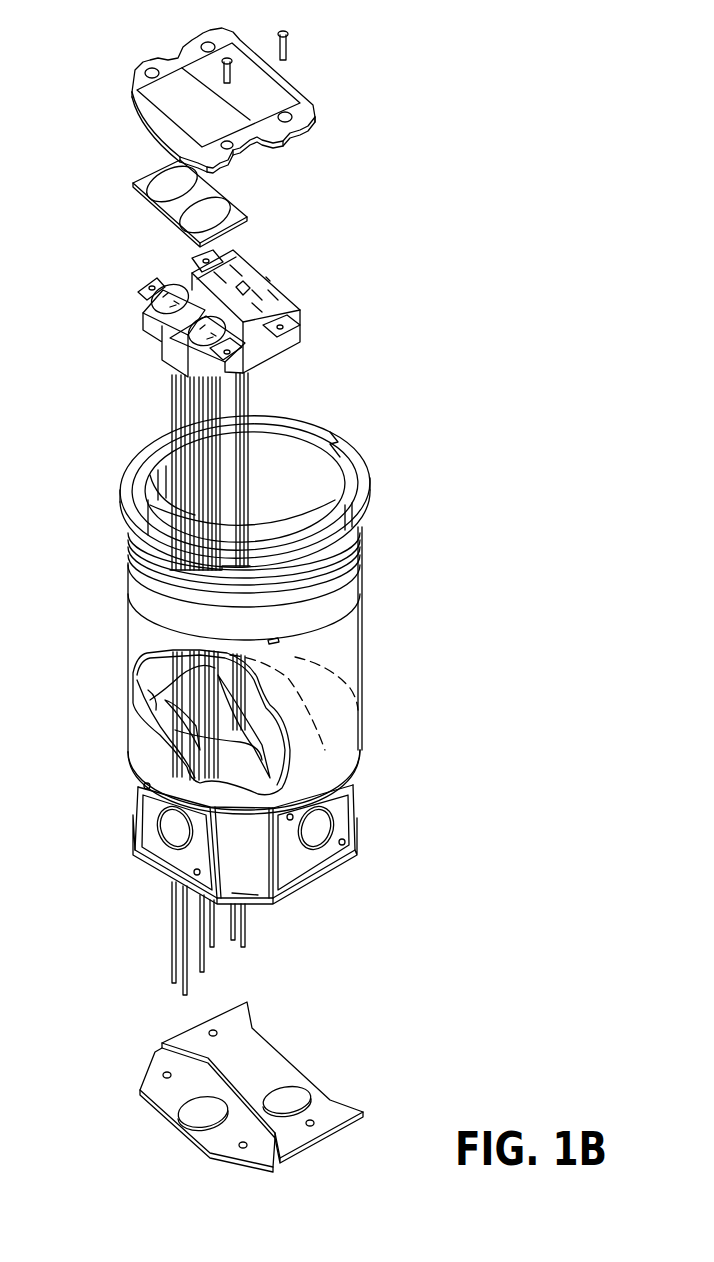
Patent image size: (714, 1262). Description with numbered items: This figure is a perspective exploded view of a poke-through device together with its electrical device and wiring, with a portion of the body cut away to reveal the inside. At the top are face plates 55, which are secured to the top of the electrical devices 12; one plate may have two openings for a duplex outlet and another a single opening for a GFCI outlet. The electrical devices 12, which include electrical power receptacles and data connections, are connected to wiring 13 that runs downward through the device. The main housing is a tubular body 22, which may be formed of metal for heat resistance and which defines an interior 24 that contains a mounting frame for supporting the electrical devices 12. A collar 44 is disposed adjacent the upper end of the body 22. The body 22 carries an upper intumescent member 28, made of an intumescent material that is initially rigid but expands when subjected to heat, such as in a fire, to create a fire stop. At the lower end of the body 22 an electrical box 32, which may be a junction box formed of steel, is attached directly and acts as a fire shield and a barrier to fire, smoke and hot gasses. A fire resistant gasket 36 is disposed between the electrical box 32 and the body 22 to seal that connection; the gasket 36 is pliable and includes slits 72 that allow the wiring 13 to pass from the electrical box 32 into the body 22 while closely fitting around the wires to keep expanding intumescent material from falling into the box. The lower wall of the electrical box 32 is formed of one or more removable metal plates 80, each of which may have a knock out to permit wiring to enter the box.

The face plate 55 is at (116, 18).
The electrical device 12 is at (187, 298).
The interior 24 is at (160, 488).
The upper intumescent member 28 is at (298, 492).
The collar 44 is at (122, 505).
The tubular body 22 is at (348, 660).
The wiring 13 is at (168, 665).
The fire resistant gasket 36 is at (150, 697).
The slit 72 is at (175, 730).
The electrical box 32 is at (263, 888).
The removable metal plate 80 is at (181, 1032).